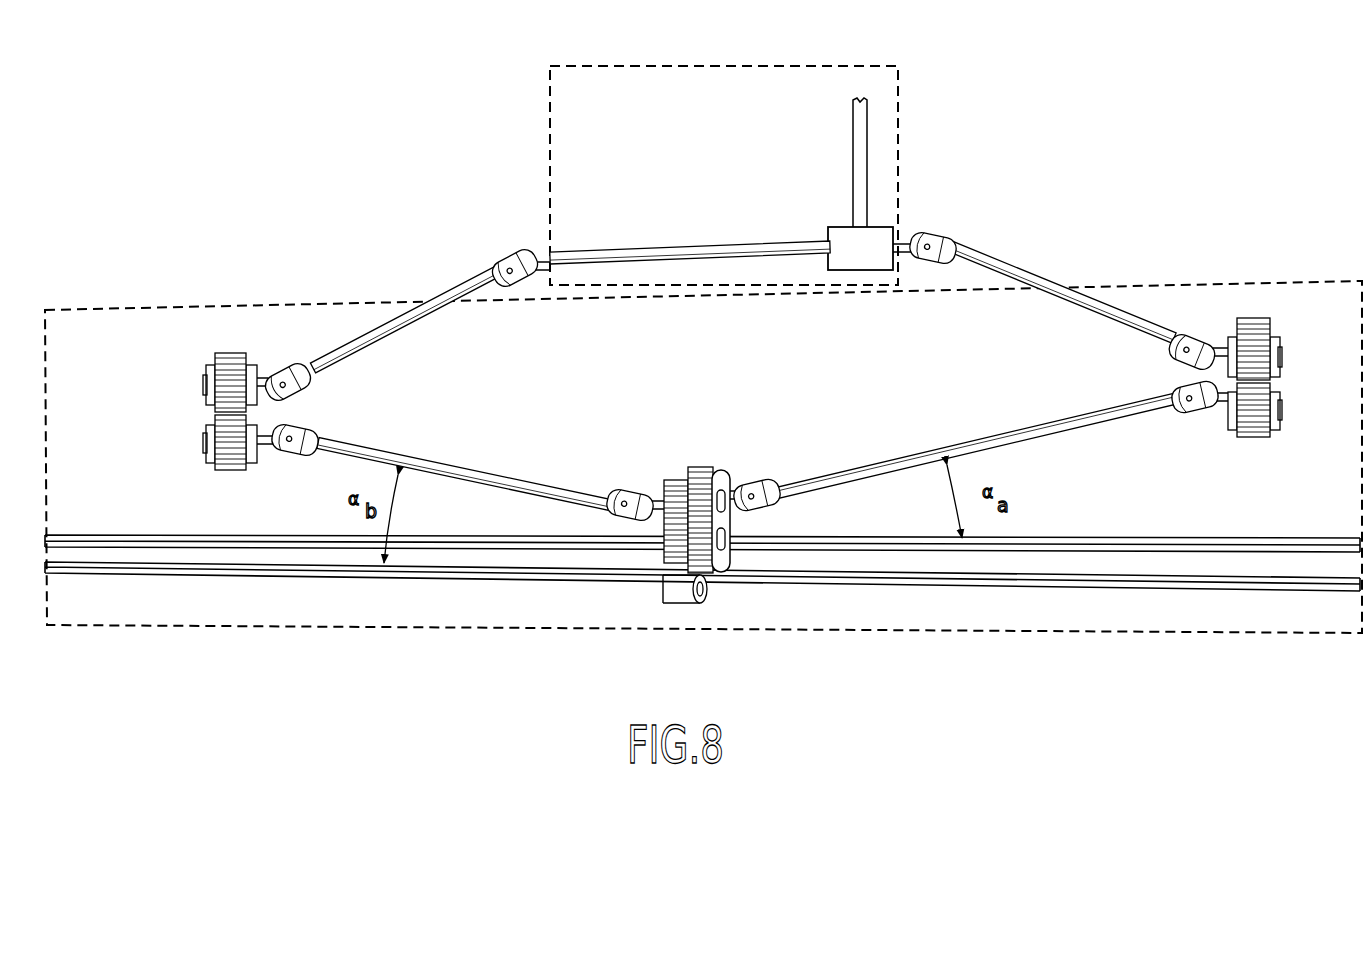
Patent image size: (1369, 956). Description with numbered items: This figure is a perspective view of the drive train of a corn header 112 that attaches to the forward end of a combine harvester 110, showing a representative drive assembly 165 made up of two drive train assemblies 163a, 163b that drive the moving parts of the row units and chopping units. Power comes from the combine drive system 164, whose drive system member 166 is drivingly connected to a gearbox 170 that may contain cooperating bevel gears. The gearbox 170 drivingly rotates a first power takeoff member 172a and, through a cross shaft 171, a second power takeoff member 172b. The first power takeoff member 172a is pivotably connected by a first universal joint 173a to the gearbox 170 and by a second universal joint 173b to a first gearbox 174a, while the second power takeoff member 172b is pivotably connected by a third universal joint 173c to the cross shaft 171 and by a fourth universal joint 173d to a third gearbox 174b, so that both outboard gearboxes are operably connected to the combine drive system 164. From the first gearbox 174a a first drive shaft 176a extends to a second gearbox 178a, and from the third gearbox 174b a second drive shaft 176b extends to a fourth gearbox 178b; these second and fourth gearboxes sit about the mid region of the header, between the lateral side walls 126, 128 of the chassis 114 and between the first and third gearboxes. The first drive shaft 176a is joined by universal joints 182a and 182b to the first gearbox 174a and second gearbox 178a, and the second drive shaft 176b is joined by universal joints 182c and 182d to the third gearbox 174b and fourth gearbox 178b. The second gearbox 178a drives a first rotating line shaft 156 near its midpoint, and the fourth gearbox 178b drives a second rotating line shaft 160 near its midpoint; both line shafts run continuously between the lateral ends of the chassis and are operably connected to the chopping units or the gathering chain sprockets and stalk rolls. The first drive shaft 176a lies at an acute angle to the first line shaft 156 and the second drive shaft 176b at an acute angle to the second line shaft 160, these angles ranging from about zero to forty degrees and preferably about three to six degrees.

The combine harvester 110 is at (748, 58).
The header 112 is at (228, 285).
The chassis 114 is at (335, 300).
The side wall 126 is at (50, 450).
The side wall 128 is at (1360, 478).
The first rotating line shaft 156 is at (898, 553).
The second rotating line shaft 160 is at (480, 576).
The drive train assembly 163a is at (1140, 302).
The drive train assembly 163b is at (495, 232).
The combine drive system 164 is at (905, 78).
The drive assembly 165 is at (1025, 237).
The drive system member 166 is at (868, 128).
The gearbox 170 is at (895, 226).
The cross shaft 171 is at (603, 246).
The first power takeoff member 172a is at (1070, 287).
The second power takeoff member 172b is at (395, 312).
The first universal joint 173a is at (946, 240).
The second universal joint 173b is at (1200, 340).
The third universal joint 173c is at (522, 250).
The fourth universal joint 173d is at (318, 392).
The first gearbox 174a is at (1256, 320).
The third gearbox 174b is at (220, 352).
The first drive shaft 176a is at (925, 446).
The second drive shaft 176b is at (452, 463).
The second gearbox 178a is at (722, 562).
The fourth gearbox 178b is at (675, 553).
The first universal joint 182a is at (1200, 416).
The second universal joint 182b is at (775, 510).
The third universal joint 182c is at (300, 458).
The fourth universal joint 182d is at (612, 513).